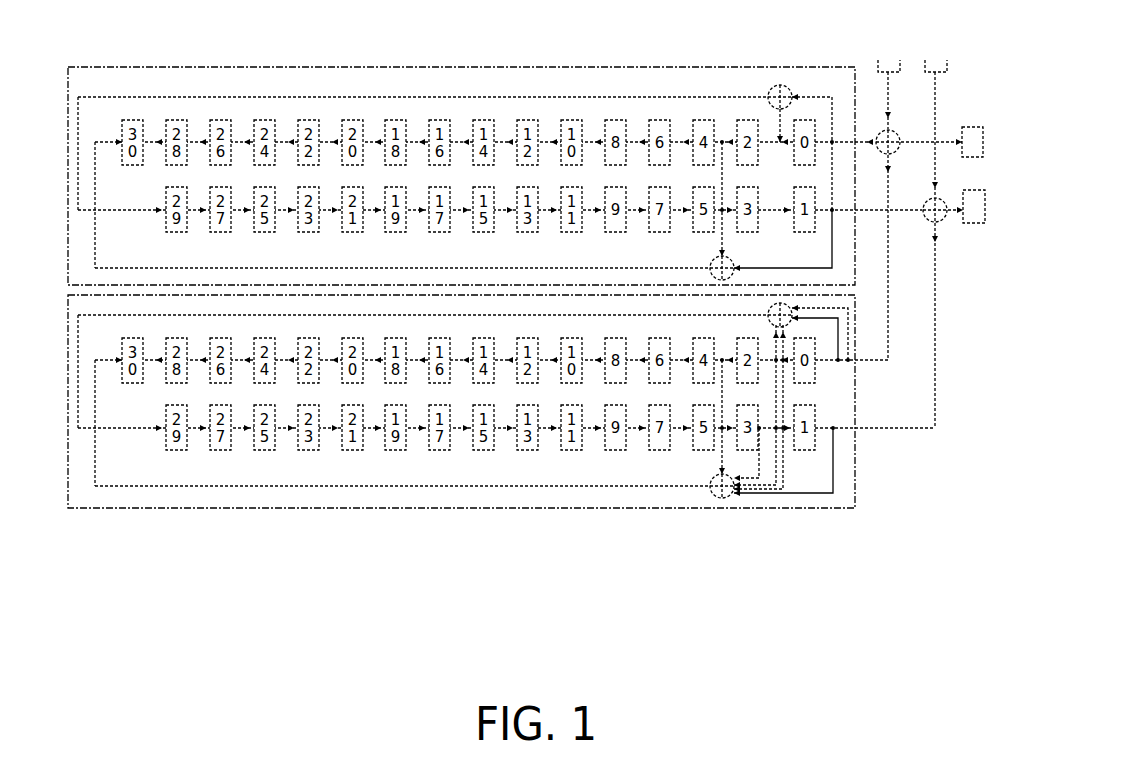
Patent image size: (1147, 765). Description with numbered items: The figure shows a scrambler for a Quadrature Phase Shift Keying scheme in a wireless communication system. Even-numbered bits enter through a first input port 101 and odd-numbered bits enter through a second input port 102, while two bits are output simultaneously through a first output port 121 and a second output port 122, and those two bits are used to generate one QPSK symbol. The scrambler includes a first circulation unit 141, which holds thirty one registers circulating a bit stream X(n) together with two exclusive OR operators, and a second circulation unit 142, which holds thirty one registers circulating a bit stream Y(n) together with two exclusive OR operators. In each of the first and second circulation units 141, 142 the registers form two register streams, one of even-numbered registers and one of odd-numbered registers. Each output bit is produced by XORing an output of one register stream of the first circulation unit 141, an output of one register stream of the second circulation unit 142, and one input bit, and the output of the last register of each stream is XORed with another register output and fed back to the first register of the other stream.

The first circulation unit 141 is at (456, 66).
The second circulation unit 142 is at (457, 509).
The first input port 101 is at (891, 60).
The second input port 102 is at (947, 65).
The first output port 121 is at (968, 128).
The second output port 122 is at (973, 193).